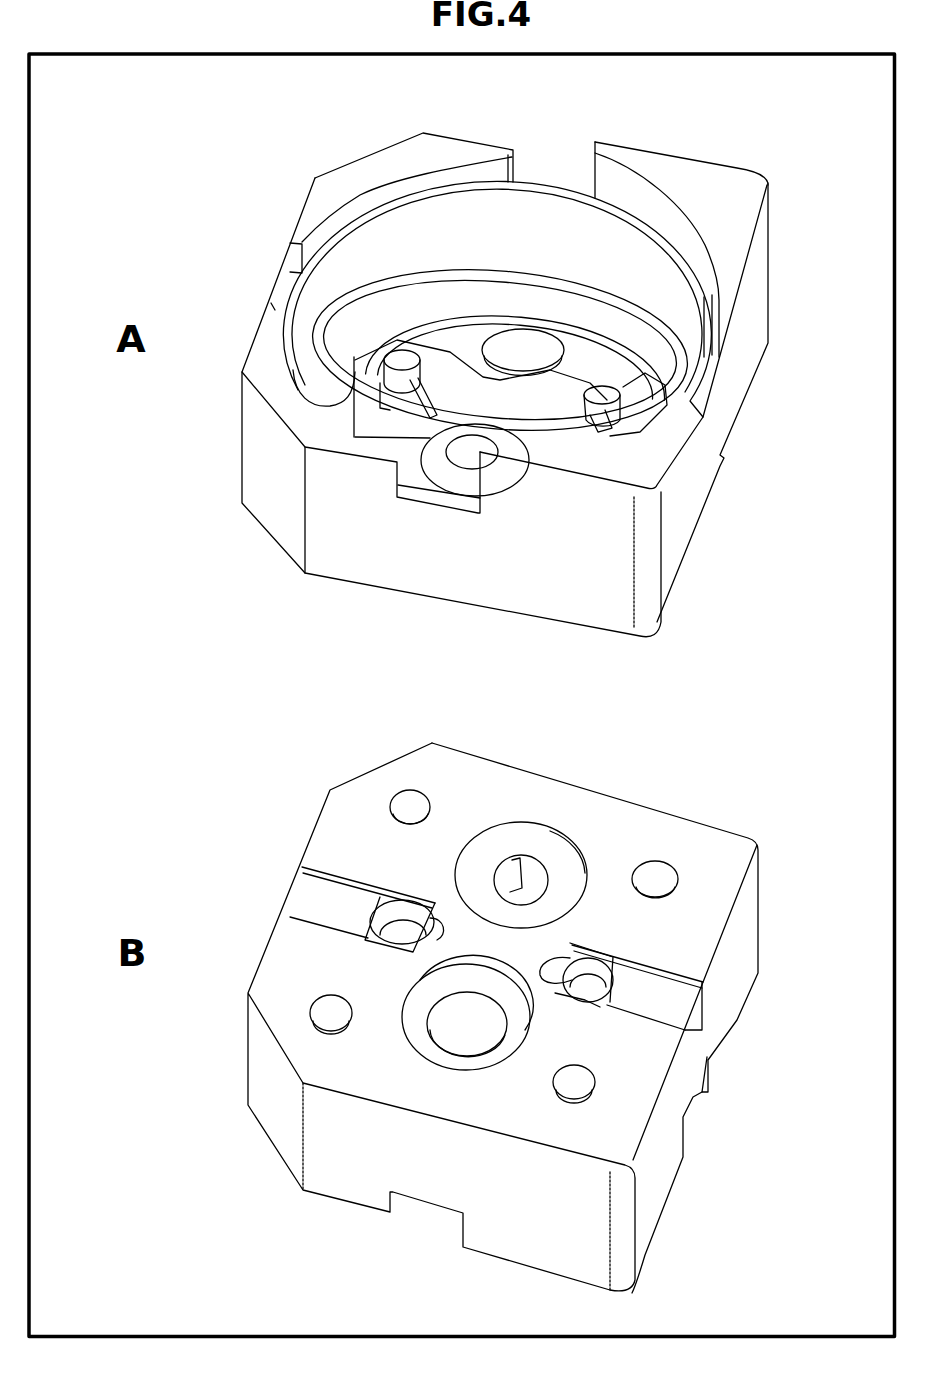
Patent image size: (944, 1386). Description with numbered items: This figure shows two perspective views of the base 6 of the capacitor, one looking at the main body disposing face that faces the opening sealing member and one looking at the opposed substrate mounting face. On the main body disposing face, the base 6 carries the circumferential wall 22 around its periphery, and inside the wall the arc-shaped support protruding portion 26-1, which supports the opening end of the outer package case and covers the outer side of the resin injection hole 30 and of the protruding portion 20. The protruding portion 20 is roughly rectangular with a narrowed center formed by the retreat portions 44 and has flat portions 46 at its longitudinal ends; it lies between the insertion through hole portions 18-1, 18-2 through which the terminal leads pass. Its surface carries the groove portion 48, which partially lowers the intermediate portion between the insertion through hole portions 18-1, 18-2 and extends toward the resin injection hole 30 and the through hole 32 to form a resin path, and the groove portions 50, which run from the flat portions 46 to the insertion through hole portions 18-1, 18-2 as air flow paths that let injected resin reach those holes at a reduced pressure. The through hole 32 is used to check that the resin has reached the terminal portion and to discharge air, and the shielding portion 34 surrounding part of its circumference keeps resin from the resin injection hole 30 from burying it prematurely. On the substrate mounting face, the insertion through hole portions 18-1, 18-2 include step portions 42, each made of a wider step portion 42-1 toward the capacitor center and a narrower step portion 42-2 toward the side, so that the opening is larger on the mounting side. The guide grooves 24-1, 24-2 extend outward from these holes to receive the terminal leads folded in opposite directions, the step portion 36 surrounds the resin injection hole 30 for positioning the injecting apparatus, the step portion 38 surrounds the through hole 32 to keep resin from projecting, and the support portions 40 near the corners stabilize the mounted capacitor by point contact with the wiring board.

The base 6 is at (712, 596).
The insertion through hole portion 18-1 is at (392, 352).
The insertion through hole portion 18-2 is at (625, 400).
The protruding portion 20 is at (420, 345).
The circumferential wall 22 is at (683, 168).
The guide groove 24-1 is at (303, 902).
The guide groove 24-2 is at (722, 478).
The support protruding portion 26-1 is at (345, 362).
The resin injection hole 30 is at (517, 333).
The through hole 32 is at (452, 474).
The shielding portion 34 is at (437, 465).
The step portion 36 is at (482, 1055).
The step portion 38 is at (543, 845).
The support portion 40 is at (413, 802).
The step portion 42 is at (745, 755).
The step portion 42-1 is at (608, 1000).
The step portion 42-2 is at (655, 870).
The retreat portion 44 is at (722, 300).
The flat portion 46 is at (728, 338).
The groove portion 48 is at (532, 450).
The groove portion 50 is at (395, 478).